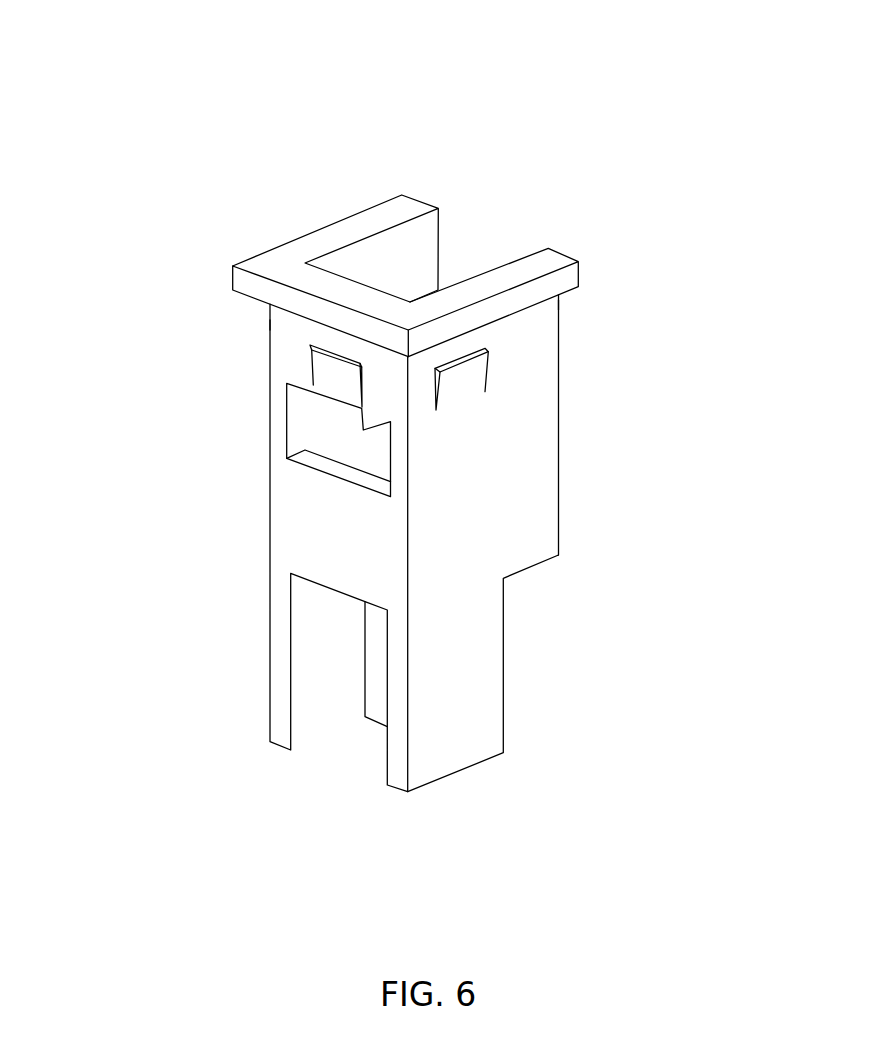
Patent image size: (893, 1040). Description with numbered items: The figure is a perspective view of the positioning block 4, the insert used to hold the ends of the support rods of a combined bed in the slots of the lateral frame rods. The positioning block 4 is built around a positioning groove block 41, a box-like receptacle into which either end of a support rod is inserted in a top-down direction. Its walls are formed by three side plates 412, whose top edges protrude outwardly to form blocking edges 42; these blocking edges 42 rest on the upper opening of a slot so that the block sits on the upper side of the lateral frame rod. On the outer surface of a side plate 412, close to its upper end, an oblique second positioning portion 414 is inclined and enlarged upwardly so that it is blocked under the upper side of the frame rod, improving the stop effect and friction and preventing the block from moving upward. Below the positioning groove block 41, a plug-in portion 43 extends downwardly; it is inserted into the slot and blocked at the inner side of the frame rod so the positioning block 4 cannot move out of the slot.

The positioning block 4 is at (335, 155).
The positioning groove block 41 is at (285, 523).
The side plate 412 is at (283, 337).
The second positioning portion 414 is at (322, 370).
The blocking edge 42 is at (541, 261).
The plug-in portion 43 is at (482, 688).